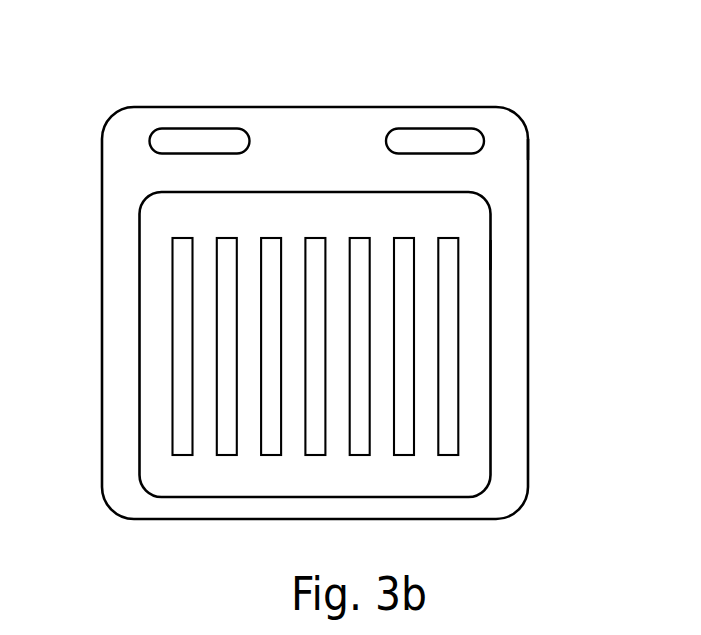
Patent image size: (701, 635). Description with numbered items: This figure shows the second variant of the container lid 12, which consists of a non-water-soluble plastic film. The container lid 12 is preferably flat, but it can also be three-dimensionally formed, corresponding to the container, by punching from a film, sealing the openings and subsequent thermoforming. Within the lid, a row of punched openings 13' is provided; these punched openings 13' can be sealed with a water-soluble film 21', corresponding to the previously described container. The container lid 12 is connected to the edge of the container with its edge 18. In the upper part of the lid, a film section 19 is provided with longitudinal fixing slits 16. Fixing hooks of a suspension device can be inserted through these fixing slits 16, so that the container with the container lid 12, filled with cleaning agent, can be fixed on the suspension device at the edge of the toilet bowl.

The container lid 12 is at (101, 91).
The punched openings 13' is at (316, 403).
The fixing slits 16 is at (425, 138).
The edge 18 is at (507, 387).
The film section 19 is at (503, 147).
The water-soluble film 21' is at (531, 254).